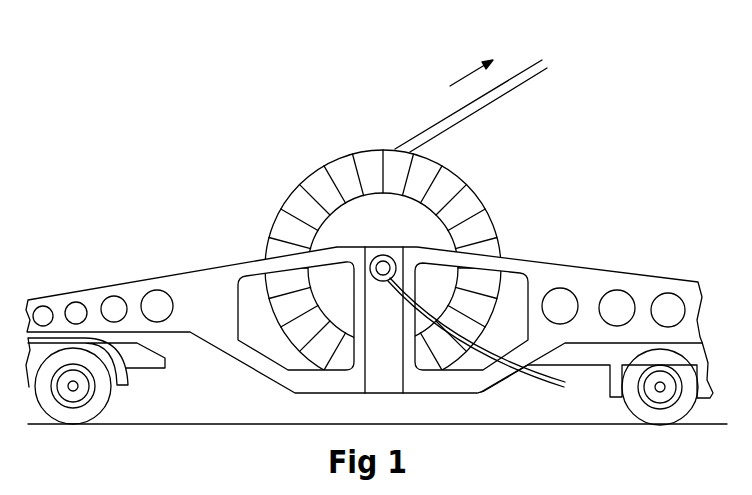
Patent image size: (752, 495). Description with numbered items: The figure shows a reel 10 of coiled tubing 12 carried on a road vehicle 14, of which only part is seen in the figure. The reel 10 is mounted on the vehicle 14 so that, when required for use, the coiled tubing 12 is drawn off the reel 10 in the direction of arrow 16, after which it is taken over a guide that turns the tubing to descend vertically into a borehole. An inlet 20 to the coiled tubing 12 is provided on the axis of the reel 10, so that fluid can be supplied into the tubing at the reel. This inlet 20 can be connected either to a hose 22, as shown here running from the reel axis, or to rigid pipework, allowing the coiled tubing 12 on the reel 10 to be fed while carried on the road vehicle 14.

The reel 10 is at (312, 183).
The coiled tubing 12 is at (513, 85).
The road vehicle 14 is at (138, 290).
The arrow 16 is at (470, 75).
The inlet 20 is at (394, 265).
The hose 22 is at (542, 384).